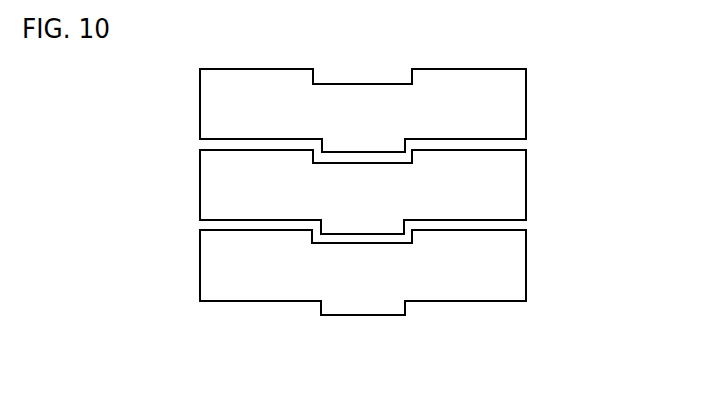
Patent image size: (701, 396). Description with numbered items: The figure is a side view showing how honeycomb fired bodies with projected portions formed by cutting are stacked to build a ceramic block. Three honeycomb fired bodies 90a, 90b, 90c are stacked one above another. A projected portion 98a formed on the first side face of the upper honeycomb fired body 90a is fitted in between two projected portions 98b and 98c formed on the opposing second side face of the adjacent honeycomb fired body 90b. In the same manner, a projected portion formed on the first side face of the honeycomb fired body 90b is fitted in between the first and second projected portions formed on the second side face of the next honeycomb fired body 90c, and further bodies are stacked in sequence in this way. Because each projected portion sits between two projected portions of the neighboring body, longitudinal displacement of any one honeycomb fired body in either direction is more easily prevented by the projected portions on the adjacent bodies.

The honeycomb fired body 90a is at (512, 94).
The honeycomb fired body 90b is at (512, 203).
The honeycomb fired body 90c is at (512, 281).
The projected portion 98a is at (358, 145).
The projected portion 98b is at (515, 157).
The projected portion 98c is at (212, 156).